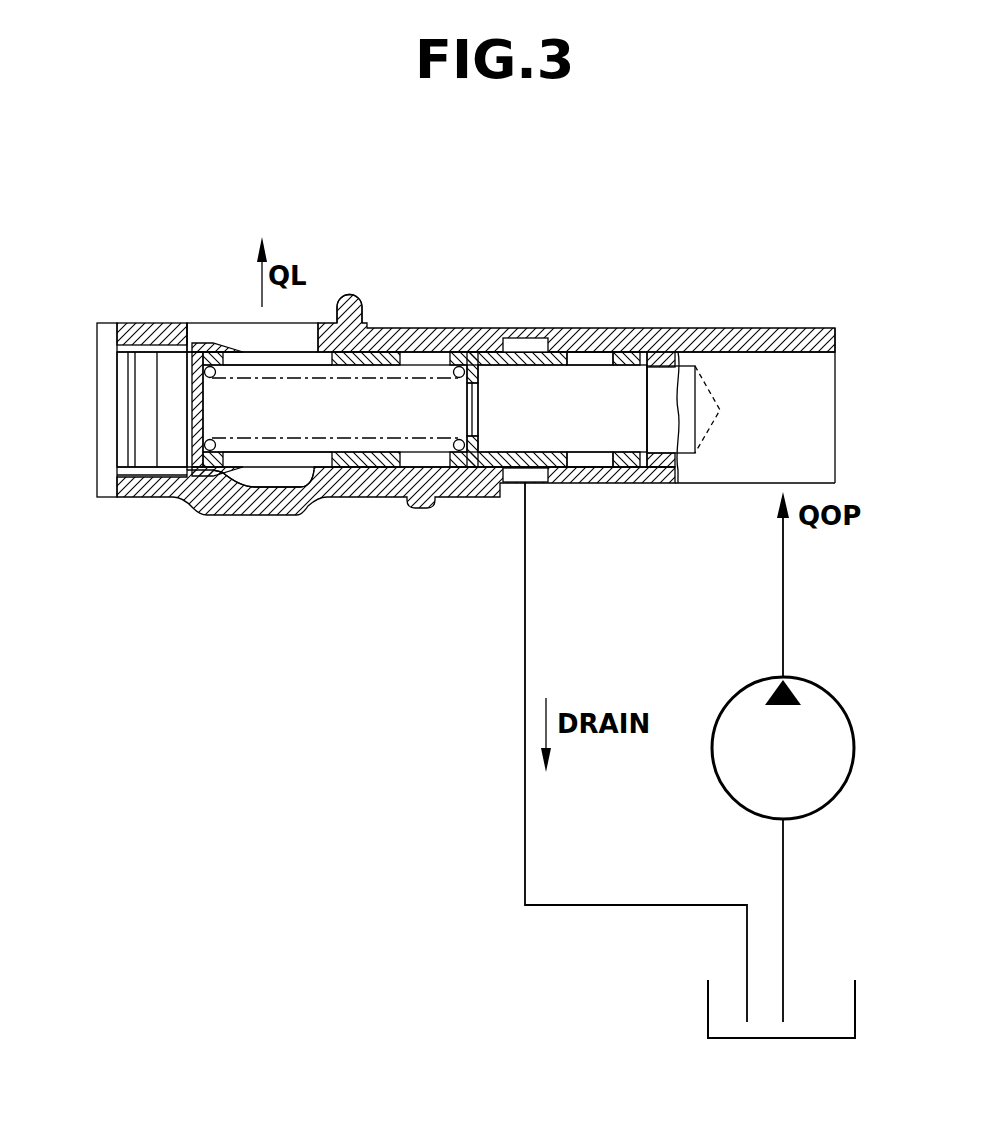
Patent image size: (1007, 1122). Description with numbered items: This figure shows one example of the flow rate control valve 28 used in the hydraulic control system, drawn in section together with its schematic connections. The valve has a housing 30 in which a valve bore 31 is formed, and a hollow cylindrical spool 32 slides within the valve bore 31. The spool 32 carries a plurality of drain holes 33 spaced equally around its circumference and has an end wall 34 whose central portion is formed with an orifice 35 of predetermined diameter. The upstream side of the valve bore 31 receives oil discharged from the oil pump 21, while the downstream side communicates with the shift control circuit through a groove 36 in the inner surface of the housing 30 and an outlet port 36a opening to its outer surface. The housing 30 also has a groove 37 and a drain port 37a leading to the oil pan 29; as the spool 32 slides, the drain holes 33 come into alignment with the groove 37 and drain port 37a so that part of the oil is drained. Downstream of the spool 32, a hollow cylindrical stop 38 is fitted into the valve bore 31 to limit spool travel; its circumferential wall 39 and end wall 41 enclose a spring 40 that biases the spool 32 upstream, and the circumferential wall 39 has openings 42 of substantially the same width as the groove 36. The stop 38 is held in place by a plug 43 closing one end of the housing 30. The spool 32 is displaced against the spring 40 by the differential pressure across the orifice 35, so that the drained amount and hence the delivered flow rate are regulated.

The flow rate control valve 28 is at (470, 240).
The housing 30 is at (187, 498).
The outlet port 36a is at (198, 323).
The openings 42 is at (270, 357).
The plug 43 is at (143, 437).
The end wall 41 is at (193, 388).
The circumferential wall 39 is at (370, 327).
The stop 38 is at (400, 330).
The drain holes 33 is at (593, 462).
The spring 40 is at (449, 352).
The end wall 34 is at (471, 458).
The orifice 35 is at (460, 403).
The spool 32 is at (490, 362).
The groove 37 is at (537, 340).
The drain port 37a is at (513, 476).
The valve bore 31 is at (660, 380).
The groove 36 is at (258, 485).
The oil pump 21 is at (717, 780).
The oil pan 29 is at (707, 1012).